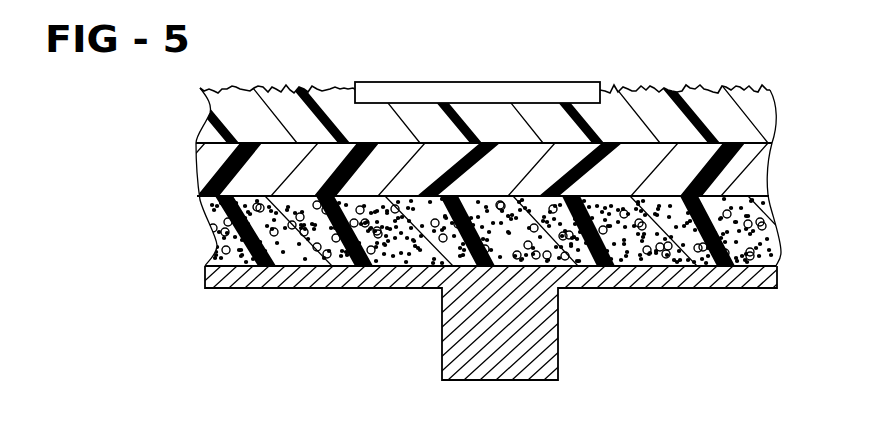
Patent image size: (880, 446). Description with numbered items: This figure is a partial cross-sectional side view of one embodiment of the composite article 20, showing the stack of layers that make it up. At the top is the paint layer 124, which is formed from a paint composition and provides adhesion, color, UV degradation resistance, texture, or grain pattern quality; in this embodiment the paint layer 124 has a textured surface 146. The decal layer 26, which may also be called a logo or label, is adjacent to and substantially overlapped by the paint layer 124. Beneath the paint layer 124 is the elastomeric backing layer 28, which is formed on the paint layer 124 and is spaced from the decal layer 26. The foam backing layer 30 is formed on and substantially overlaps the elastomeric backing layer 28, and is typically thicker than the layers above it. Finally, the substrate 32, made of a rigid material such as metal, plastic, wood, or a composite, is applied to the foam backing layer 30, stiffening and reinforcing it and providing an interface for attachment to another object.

The composite article 20 is at (128, 208).
The decal layer 26 is at (506, 82).
The elastomeric backing layer 28 is at (202, 178).
The foam backing layer 30 is at (217, 225).
The substrate 32 is at (205, 287).
The paint layer 124 is at (218, 108).
The textured surface 146 is at (680, 90).